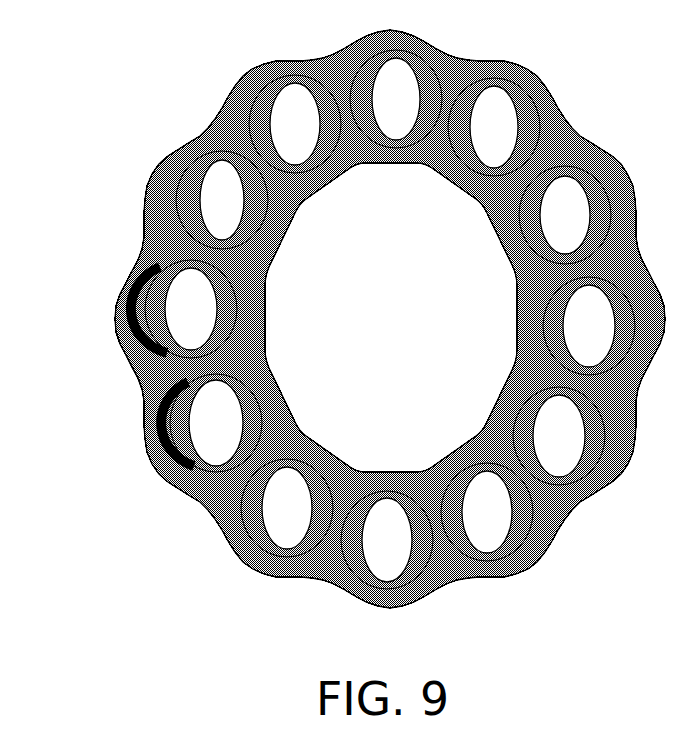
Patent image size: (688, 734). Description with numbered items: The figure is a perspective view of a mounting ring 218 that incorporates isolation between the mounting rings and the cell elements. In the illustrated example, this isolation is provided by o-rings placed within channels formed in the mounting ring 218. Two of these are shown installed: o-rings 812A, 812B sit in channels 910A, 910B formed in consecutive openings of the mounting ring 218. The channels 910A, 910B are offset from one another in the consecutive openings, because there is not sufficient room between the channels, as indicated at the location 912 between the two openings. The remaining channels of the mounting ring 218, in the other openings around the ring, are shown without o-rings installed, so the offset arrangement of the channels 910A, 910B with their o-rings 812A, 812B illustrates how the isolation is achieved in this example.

The mounting ring 218 is at (543, 127).
The region between channels 912 is at (215, 360).
The o-ring 812A is at (143, 290).
The o-ring 812B is at (187, 412).
The channel 910A is at (140, 318).
The channel 910B is at (182, 450).